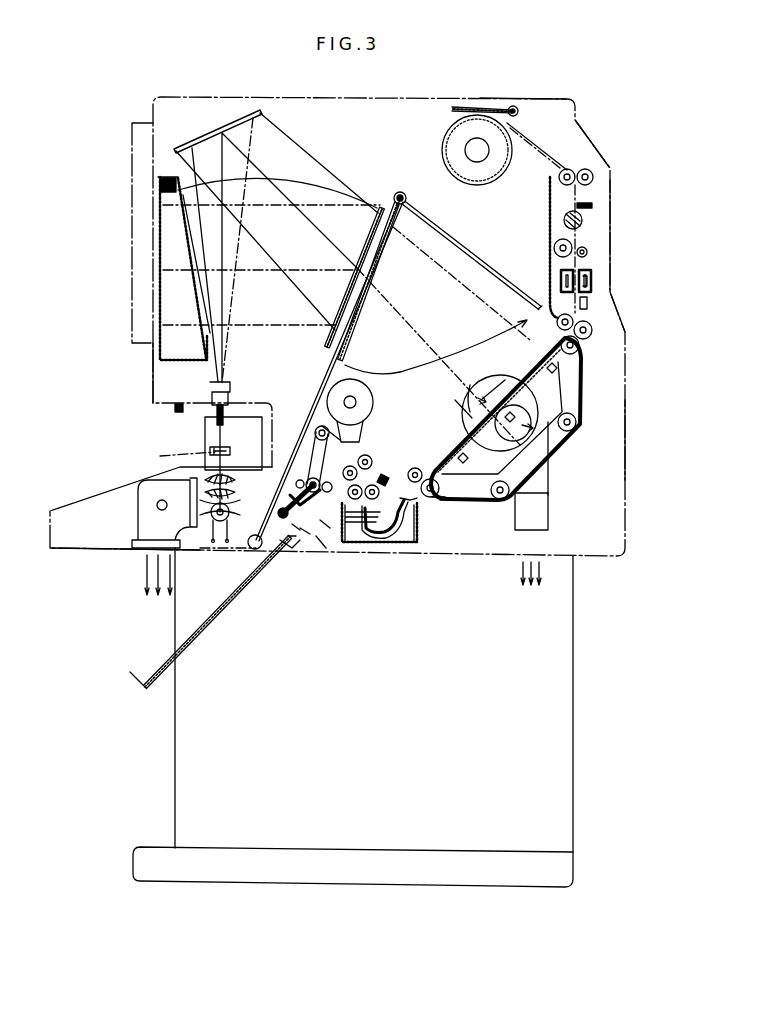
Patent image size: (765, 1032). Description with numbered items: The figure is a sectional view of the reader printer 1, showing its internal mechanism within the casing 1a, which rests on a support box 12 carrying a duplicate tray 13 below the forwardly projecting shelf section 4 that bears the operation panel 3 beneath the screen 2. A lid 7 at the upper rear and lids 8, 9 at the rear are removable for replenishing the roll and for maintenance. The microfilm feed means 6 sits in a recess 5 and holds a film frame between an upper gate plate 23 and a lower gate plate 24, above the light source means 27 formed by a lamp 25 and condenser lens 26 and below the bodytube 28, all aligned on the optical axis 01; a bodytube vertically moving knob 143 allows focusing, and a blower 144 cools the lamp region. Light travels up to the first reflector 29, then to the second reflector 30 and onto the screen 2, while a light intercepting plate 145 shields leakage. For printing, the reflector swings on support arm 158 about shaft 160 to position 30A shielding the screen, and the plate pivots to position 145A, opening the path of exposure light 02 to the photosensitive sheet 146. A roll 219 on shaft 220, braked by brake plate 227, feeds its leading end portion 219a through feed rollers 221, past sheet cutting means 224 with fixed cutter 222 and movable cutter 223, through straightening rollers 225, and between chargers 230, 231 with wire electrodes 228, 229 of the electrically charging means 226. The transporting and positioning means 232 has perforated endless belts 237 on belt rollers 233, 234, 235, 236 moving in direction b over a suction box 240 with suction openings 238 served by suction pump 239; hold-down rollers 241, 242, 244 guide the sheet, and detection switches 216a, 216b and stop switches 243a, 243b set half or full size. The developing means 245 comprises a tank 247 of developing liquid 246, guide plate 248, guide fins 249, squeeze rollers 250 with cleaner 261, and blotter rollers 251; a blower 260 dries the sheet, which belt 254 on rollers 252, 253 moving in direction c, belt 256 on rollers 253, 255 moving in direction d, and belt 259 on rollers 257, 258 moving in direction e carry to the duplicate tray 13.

The reader printer 1 is at (632, 416).
The casing 1a is at (584, 130).
The screen 2 is at (163, 270).
The operation panel 3 is at (125, 478).
The shelf section 4 is at (90, 550).
The recess 5 is at (154, 430).
The microfilm feed means 6 is at (284, 388).
The lid 7 is at (536, 104).
The lid 8 is at (611, 180).
The lid 9 is at (626, 448).
The support box 12 is at (574, 660).
The duplicate tray 13 is at (160, 672).
The upper gate plate 23 is at (210, 447).
The lower gate plate 24 is at (170, 456).
The lamp 25 is at (212, 522).
The condenser lens 26 is at (236, 487).
The light source means 27 is at (210, 556).
The bodytube 28 is at (230, 426).
The first reflector 29 is at (203, 146).
The second reflector 30 is at (370, 250).
The dash-and-dot line position of second reflector 30A is at (182, 232).
The optical axis 01 is at (226, 452).
The path of exposure light 02 is at (396, 302).
The bodytube vertically moving knob 143 is at (172, 408).
The blower 144 is at (140, 516).
The light intercepting plate 145 is at (372, 278).
The dash-and-dot position of light intercepting plate 145A is at (488, 250).
The electrophotographic photosensitive sheet 146 is at (498, 380).
The support arm 158 is at (322, 362).
The shaft 160 is at (250, 548).
The sheet detection switch 216a is at (590, 310).
The sheet detection switch 216b is at (582, 398).
The roll of photosensitive strip 219 is at (446, 132).
The leading end portion 219a is at (540, 150).
The shaft 220 is at (465, 152).
The photosensitive sheet feed rollers 221 is at (556, 172).
The fixed cutter 222 is at (590, 208).
The movable cutter 223 is at (582, 226).
The sheet cutting means 224 is at (592, 204).
The photosensitive sheet straightening and transporting rollers 225 is at (562, 234).
The electrically charging means 226 is at (592, 266).
The brake plate 227 is at (490, 106).
The wire electrode 228 is at (560, 276).
The wire electrode 229 is at (594, 294).
The charger 230 is at (553, 246).
The charger 231 is at (590, 279).
The photosensitive sheet transporting and positioning means 232 is at (420, 408).
The belt roller 233 is at (466, 502).
The belt roller 234 is at (548, 505).
The belt roller 235 is at (578, 421).
The belt roller 236 is at (560, 368).
The perforated endless belts 237 is at (548, 486).
The suction openings 238 is at (418, 402).
The suction pump 239 is at (548, 528).
The suction box 240 is at (497, 498).
The hold-down roller 241 is at (560, 324).
The hold-down roller 242 is at (580, 348).
The stop switch 243a is at (535, 445).
The stop switch 243b is at (468, 434).
The hold-down roller 244 is at (418, 463).
The developing means 245 is at (408, 548).
The developing liquid 246 is at (380, 548).
The developing liquid tank 247 is at (424, 558).
The guide plate 248 is at (433, 497).
The guide fins 249 is at (428, 500).
The squeeze rollers 250 is at (358, 462).
The blotter rollers 251 is at (370, 440).
The belt roller 252 is at (324, 390).
The belt roller 253 is at (332, 540).
The tape-like endless belt 254 is at (310, 510).
The belt roller 255 is at (296, 548).
The tape-like endless belt 256 is at (282, 546).
The belt roller 257 is at (326, 546).
The belt roller 258 is at (296, 540).
The endless belt 259 is at (302, 536).
The blower 260 is at (370, 378).
The cleaner 261 is at (368, 480).
The arrow b is at (504, 376).
The arrow c is at (317, 459).
The arrow d is at (295, 490).
The arrow e is at (325, 493).